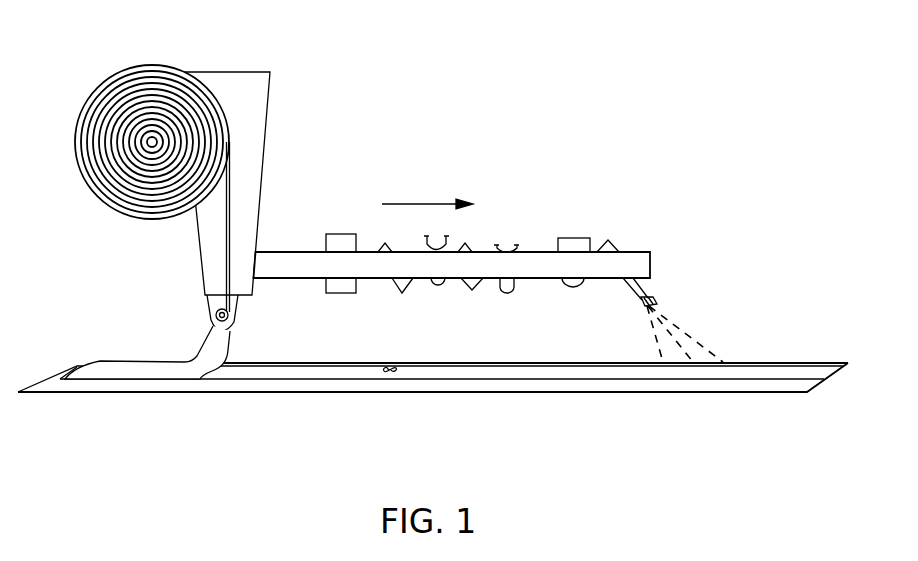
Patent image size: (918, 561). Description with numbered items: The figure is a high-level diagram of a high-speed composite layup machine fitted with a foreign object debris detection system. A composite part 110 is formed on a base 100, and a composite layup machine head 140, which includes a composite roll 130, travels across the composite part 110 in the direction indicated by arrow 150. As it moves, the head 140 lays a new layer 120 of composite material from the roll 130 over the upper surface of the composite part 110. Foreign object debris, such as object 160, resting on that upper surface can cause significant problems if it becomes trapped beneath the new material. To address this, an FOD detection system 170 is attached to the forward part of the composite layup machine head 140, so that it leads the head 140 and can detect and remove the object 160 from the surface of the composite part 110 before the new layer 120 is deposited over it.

The base 100 is at (743, 392).
The composite part 110 is at (430, 381).
The new layer 120 is at (211, 369).
The composite roll 130 is at (157, 63).
The composite layup machine head 140 is at (253, 282).
The arrow 150 is at (410, 203).
The object 160 is at (396, 365).
The FOD detection system 170 is at (628, 251).